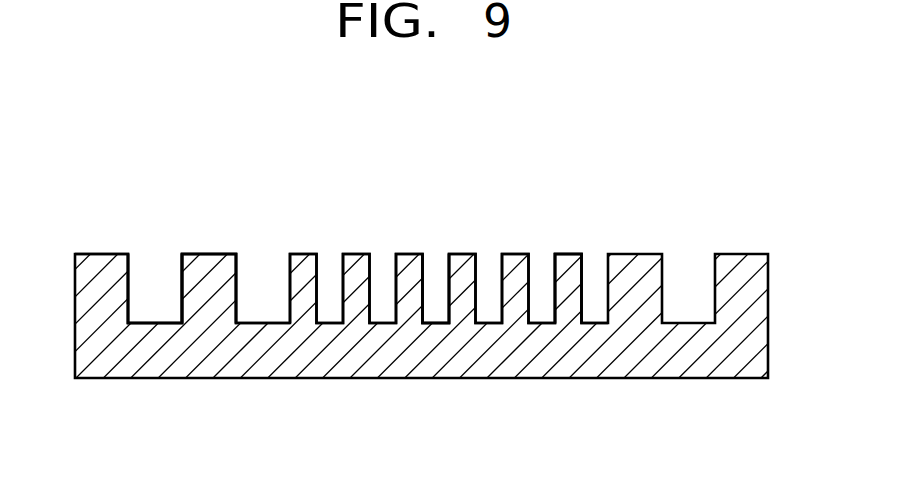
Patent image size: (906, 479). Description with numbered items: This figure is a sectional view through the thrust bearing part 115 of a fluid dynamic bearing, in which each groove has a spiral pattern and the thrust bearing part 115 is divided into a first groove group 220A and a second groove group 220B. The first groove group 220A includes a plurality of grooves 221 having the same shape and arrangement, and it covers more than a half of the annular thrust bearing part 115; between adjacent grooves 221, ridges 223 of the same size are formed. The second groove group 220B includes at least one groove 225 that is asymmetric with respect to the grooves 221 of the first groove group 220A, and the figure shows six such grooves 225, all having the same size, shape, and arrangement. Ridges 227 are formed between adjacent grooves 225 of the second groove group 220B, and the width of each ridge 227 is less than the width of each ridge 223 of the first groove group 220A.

The thrust bearing part 115 is at (715, 210).
The first groove group 220A is at (287, 240).
The second groove group 220B is at (603, 240).
The grooves 221 is at (160, 298).
The ridges 223 is at (197, 288).
The grooves 225 is at (434, 303).
The ridges 227 is at (572, 262).